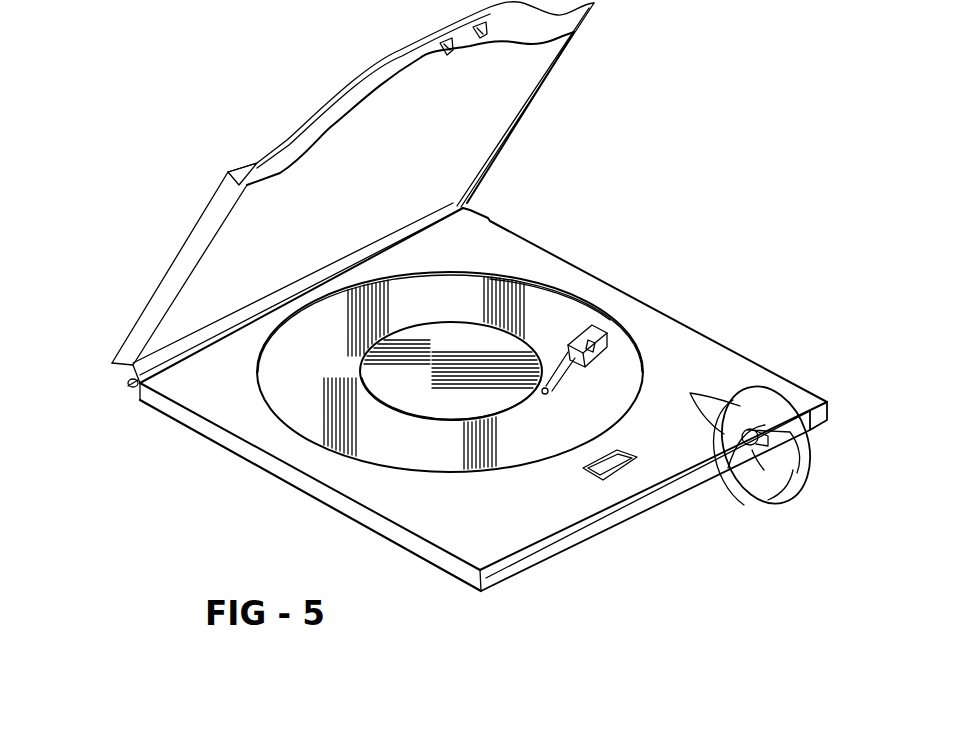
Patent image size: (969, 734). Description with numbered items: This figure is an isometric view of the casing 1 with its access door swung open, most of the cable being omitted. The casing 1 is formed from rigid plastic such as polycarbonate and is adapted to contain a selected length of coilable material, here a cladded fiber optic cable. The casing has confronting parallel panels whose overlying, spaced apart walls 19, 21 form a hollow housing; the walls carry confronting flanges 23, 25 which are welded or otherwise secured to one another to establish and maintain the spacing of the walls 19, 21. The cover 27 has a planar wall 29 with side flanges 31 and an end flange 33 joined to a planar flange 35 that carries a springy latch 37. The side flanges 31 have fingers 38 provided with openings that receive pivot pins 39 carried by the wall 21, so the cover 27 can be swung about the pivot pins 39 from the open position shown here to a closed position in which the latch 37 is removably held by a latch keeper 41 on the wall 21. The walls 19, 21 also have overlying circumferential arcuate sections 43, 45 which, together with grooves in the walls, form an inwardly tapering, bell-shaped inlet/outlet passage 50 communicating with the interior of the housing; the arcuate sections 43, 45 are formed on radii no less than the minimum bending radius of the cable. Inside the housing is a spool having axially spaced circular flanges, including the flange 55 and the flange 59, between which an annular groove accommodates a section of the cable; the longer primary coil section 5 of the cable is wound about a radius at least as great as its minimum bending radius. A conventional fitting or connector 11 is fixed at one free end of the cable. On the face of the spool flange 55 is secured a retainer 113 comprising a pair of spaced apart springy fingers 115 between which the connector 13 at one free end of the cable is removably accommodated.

The casing 1 is at (735, 268).
The coil section 5 is at (547, 396).
The connector 11 is at (764, 470).
The connector 13 is at (600, 342).
The wall 19 is at (585, 543).
The wall 21 is at (513, 506).
The flange 23 is at (493, 583).
The flange 25 is at (495, 568).
The cover 27 is at (612, 108).
The planar wall 29 is at (407, 174).
The side flanges 31 is at (188, 240).
The end flange 33 is at (232, 170).
The planar flange 35 is at (330, 125).
The springy latch 37 is at (462, 48).
The fingers 38 is at (115, 360).
The pivot pins 39 is at (132, 390).
The latch keeper 41 is at (634, 455).
The arcuate section 43 is at (795, 473).
The arcuate section 45 is at (800, 400).
The inlet/outlet passage 50 is at (770, 432).
The circular flange 55 is at (305, 350).
The circular flange 59 is at (424, 400).
The retainer 113 is at (548, 325).
The springy fingers 115 is at (570, 335).